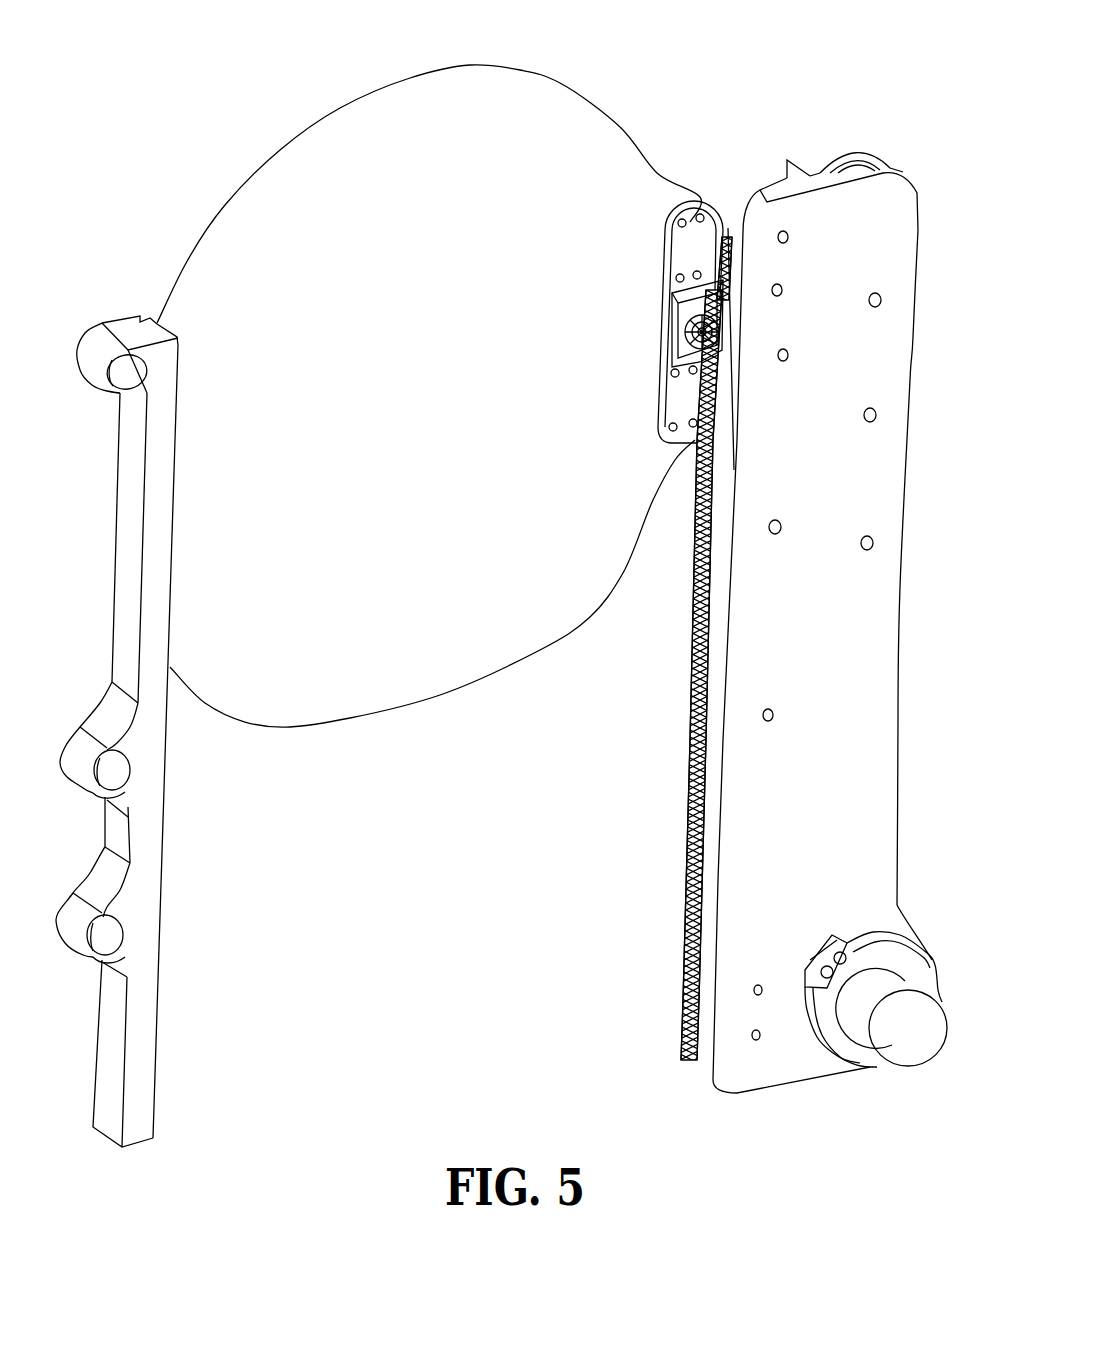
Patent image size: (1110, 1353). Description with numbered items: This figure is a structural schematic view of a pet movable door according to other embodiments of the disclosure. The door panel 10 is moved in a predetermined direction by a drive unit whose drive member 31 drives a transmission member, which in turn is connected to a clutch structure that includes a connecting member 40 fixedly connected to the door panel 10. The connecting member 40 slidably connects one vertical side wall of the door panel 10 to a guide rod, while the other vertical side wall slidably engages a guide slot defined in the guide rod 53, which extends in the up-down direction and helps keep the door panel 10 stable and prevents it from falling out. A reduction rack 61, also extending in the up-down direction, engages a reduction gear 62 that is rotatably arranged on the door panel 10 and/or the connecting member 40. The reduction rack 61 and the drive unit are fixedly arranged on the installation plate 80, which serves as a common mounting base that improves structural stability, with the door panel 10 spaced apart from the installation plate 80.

The door panel 10 is at (600, 160).
The drive member 31 is at (913, 1000).
The connecting member 40 is at (693, 197).
The guide rod 53 is at (130, 333).
The reduction rack 61 is at (700, 603).
The reduction gear 62 is at (702, 332).
The installation plate 80 is at (860, 598).